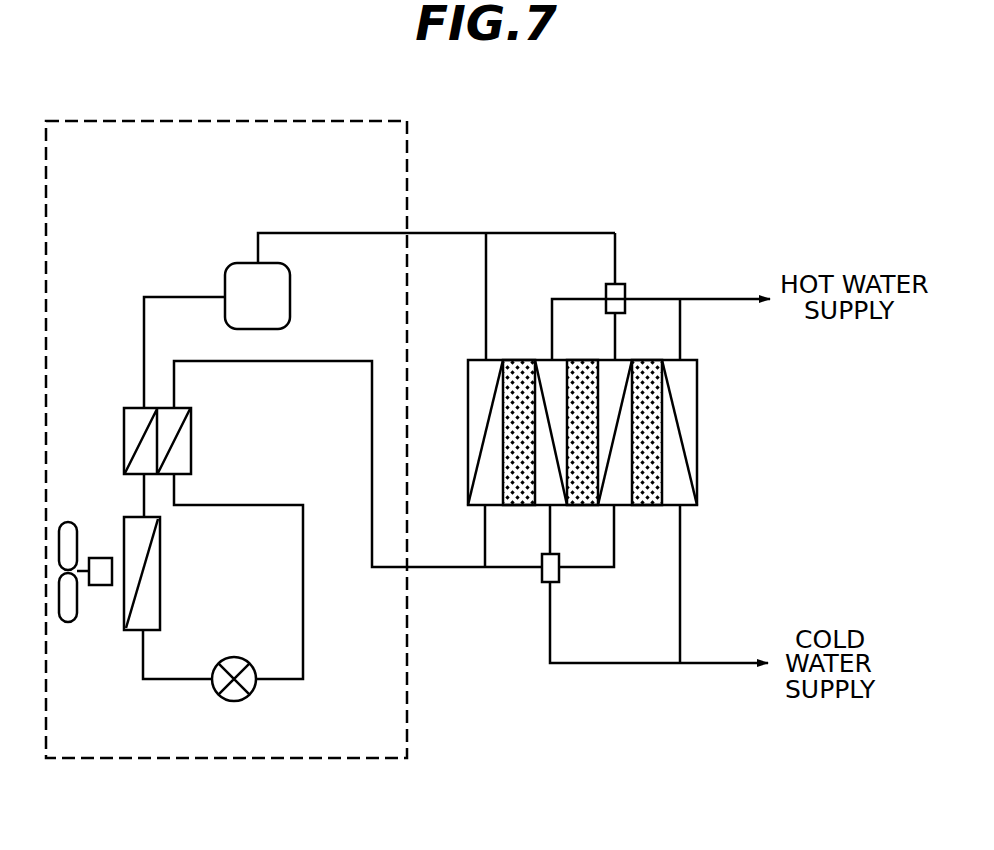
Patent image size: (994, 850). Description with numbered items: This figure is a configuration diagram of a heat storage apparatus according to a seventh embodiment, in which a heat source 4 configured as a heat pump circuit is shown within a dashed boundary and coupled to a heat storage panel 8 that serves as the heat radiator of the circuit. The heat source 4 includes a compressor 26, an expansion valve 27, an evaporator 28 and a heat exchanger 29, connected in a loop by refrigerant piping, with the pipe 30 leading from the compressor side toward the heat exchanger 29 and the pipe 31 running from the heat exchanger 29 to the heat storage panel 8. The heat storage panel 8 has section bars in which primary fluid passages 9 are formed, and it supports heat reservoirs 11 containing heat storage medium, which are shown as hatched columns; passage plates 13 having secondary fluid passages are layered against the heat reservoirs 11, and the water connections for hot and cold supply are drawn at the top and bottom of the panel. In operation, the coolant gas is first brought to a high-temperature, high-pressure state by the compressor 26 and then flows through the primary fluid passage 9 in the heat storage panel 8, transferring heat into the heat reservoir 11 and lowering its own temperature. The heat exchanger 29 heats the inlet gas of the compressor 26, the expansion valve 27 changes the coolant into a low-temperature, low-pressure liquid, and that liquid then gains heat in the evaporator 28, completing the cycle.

The heat source 4 is at (229, 758).
The heat storage panel 8 is at (468, 410).
The primary fluid passage 9 is at (486, 330).
The heat reservoir 11 is at (523, 362).
The passage plate 13 is at (543, 493).
The compressor 26 is at (229, 265).
The expansion valve 27 is at (248, 697).
The evaporator 28 is at (128, 630).
The heat exchanger 29 is at (127, 406).
The refrigerant pipe 30 is at (168, 295).
The refrigerant pipe 31 is at (268, 361).